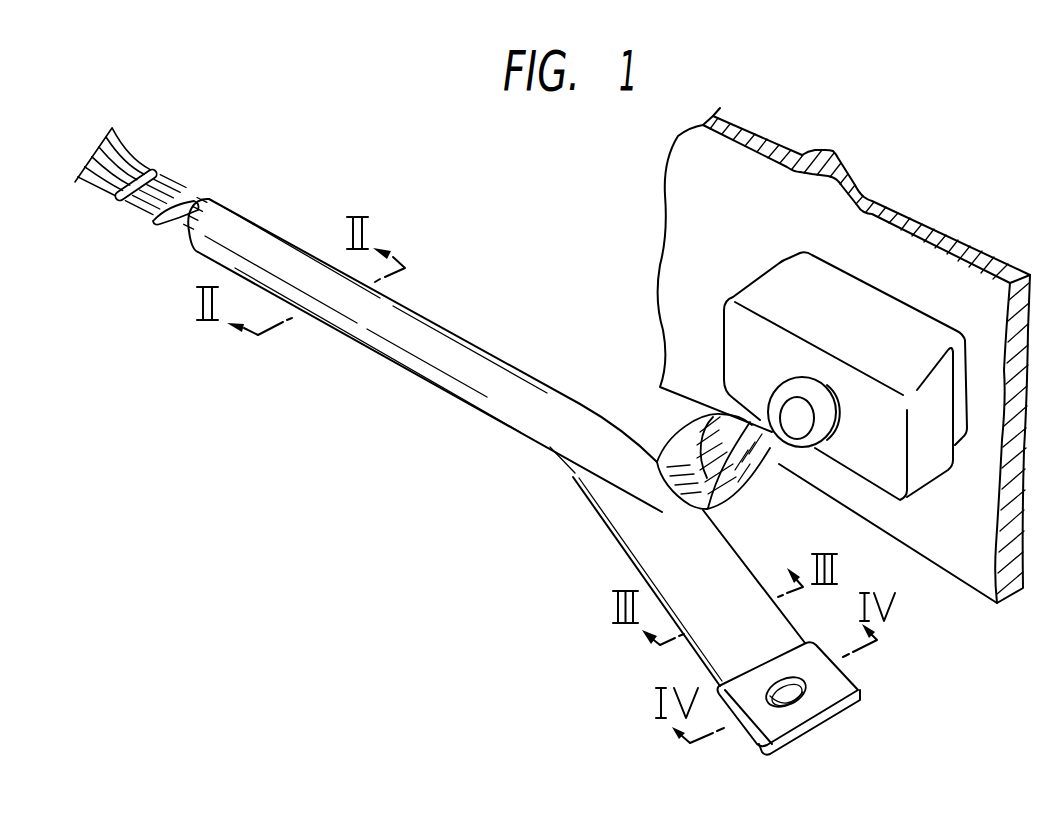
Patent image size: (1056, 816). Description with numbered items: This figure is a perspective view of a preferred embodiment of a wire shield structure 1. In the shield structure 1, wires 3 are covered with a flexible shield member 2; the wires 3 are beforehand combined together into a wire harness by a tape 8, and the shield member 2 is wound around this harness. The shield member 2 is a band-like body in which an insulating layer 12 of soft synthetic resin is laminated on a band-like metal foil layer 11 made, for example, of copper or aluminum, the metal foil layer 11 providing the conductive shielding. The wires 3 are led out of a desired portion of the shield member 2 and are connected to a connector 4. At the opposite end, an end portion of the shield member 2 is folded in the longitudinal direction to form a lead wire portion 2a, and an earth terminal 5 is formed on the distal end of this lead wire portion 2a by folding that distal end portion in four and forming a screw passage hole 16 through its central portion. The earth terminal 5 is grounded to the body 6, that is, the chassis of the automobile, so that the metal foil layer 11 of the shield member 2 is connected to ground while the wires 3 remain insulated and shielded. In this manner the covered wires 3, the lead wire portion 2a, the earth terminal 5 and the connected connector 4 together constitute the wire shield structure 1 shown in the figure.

The shield structure 1 is at (508, 300).
The shield member 2 is at (462, 386).
The lead wire portion 2a is at (648, 556).
The wires 3 is at (183, 190).
The connector 4 is at (758, 290).
The earth terminal 5 is at (815, 724).
The body 6 is at (983, 570).
The tape 8 is at (168, 222).
The metal foil layer 11 is at (833, 693).
The insulating layer 12 is at (596, 492).
The screw passage hole 16 is at (785, 700).